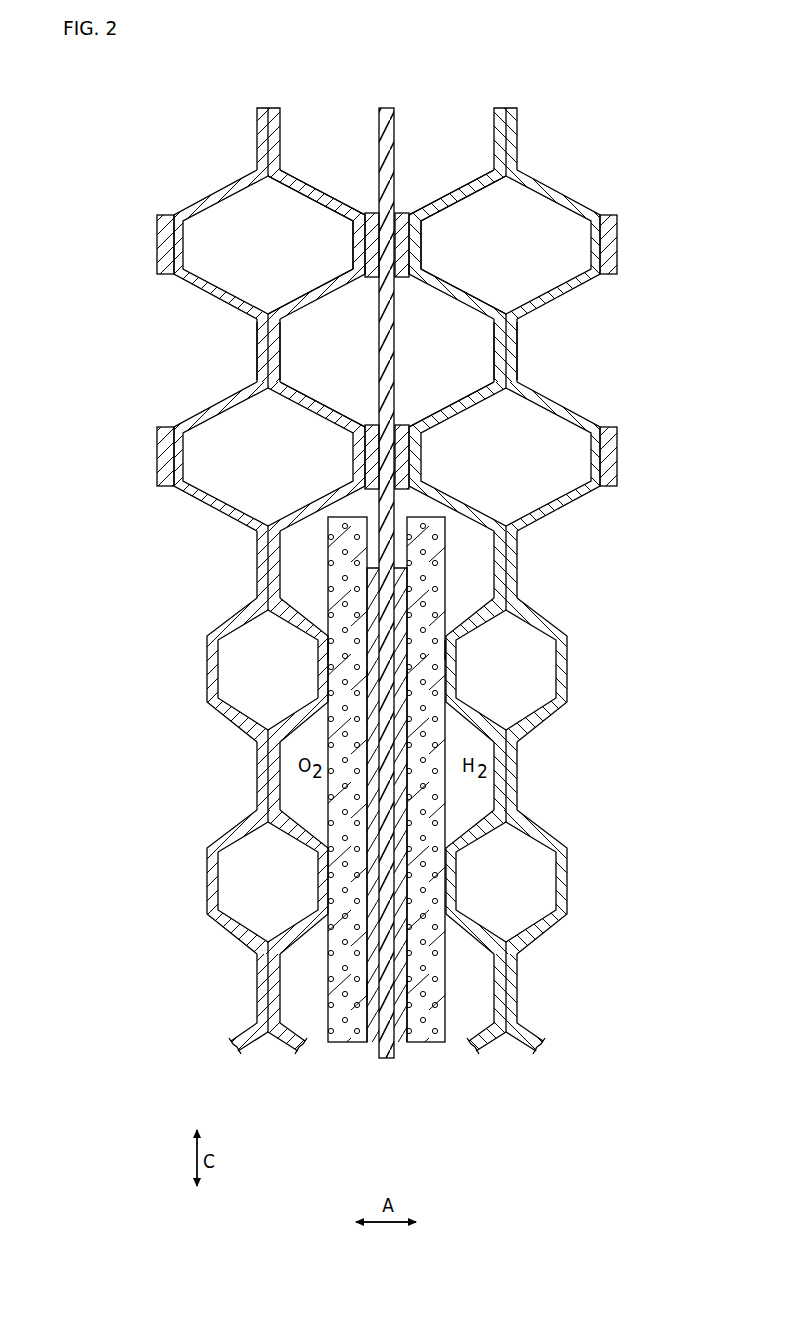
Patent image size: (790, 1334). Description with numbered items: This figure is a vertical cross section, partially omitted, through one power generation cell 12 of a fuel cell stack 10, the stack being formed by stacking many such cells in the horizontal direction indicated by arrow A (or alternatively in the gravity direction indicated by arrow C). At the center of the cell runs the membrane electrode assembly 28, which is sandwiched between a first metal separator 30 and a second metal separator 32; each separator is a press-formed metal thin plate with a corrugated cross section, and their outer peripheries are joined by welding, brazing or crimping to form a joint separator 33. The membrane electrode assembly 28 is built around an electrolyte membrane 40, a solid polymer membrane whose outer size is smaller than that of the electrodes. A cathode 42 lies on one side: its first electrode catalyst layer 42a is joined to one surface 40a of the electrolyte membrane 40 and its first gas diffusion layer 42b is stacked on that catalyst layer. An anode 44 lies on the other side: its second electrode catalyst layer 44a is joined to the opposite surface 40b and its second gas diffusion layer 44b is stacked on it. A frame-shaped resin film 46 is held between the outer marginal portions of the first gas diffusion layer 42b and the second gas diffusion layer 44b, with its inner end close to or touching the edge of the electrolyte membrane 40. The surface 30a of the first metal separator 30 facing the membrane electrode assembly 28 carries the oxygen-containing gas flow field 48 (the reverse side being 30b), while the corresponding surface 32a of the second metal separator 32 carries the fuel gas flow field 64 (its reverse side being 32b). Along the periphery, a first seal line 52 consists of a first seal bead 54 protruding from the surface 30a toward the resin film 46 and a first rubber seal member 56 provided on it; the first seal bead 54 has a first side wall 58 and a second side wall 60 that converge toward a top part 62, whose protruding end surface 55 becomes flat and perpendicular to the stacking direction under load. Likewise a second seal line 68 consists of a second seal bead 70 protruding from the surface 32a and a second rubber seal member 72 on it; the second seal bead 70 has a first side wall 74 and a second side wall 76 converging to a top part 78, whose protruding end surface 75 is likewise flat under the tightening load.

The fuel cell stack 10 is at (197, 60).
The power generation cell 12 is at (639, 832).
The membrane electrode assembly 28 is at (447, 880).
The first metal separator 30 is at (288, 187).
The surface of the first metal separator 30a is at (280, 353).
The first separator wall portion 30b is at (262, 345).
The second metal separator 32 is at (244, 177).
The surface of the second metal separator 32a is at (494, 352).
The second separator wall portion 32b is at (517, 352).
The joint separator 33 is at (130, 140).
The electrolyte membrane 40 is at (387, 1061).
The one surface of the electrolyte membrane 40a is at (365, 990).
The surface of the electrolyte membrane 40b is at (402, 992).
The cathode 42 is at (347, 1047).
The first electrode catalyst layer 42a is at (362, 649).
The first gas diffusion layer 42b is at (347, 678).
The anode 44 is at (425, 1047).
The second electrode catalyst layer 44a is at (412, 647).
The second gas diffusion layer 44b is at (427, 677).
The resin film 46 is at (386, 106).
The oxygen-containing gas flow field 48 is at (295, 792).
The first seal line 52 is at (293, 75).
The first seal bead 54 is at (313, 184).
The protruding end surface of the first seal bead 55 is at (371, 268).
The first rubber seal member 56 is at (372, 213).
The first side wall 58 is at (323, 203).
The second side wall 60 is at (311, 290).
The top part 62 is at (362, 251).
The fuel gas flow field 64 is at (468, 797).
The second seal line 68 is at (414, 75).
The second seal bead 70 is at (463, 185).
The second rubber seal member 72 is at (402, 212).
The first side wall 74 is at (455, 195).
The protruding end surface of the second seal bead 75 is at (399, 272).
The second side wall 76 is at (457, 288).
The top part 78 is at (416, 244).